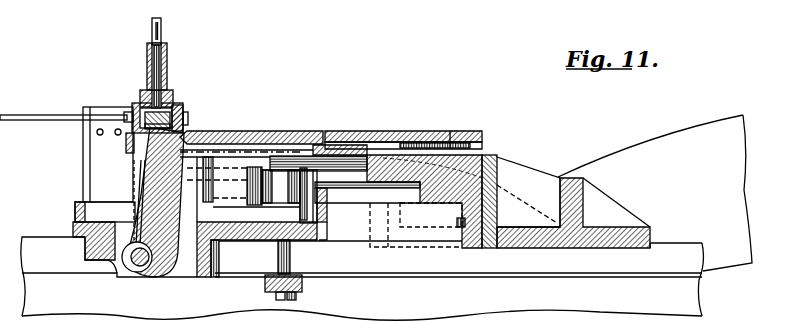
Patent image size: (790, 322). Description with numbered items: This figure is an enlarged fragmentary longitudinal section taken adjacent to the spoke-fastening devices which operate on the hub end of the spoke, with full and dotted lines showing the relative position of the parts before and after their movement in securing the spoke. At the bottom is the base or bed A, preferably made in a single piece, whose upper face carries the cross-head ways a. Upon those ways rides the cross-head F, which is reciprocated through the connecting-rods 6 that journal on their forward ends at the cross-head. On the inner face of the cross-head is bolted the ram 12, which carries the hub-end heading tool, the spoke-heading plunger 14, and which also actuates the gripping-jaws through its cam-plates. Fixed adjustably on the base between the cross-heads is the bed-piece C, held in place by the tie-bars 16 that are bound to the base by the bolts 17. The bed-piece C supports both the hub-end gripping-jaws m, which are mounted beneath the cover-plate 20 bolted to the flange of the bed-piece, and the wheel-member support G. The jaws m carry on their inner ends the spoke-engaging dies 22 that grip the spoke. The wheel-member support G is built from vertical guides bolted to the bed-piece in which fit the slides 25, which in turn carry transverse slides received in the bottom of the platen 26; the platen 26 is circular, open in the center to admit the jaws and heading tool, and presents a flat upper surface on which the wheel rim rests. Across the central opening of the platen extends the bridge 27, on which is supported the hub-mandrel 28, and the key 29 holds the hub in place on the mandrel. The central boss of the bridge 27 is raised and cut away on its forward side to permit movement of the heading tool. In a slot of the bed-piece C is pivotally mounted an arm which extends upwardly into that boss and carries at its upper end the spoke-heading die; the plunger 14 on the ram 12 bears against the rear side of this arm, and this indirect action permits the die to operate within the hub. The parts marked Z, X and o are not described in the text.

The base or bed A is at (610, 298).
The cross-head ways a is at (668, 245).
The connecting-rods 6 is at (624, 193).
The cross-head F is at (556, 188).
The spoke-heading plunger 14 is at (348, 135).
The wheel-member support G is at (403, 131).
The platen 26 is at (450, 142).
The bridge 27 is at (222, 127).
The cover-plate 20 is at (287, 131).
The slides 25 is at (278, 197).
The rams 12 is at (417, 225).
The bed-piece C is at (317, 238).
The bolts 17 is at (278, 262).
The tie-bars 16 is at (300, 289).
The spoke-engaging dies 22 is at (100, 108).
The hub-end gripping-jaws m is at (105, 202).
The rod Z is at (38, 116).
The tab X is at (188, 118).
The opening o is at (152, 131).
The hub-mandrel 28 is at (161, 63).
The key 29 is at (159, 38).